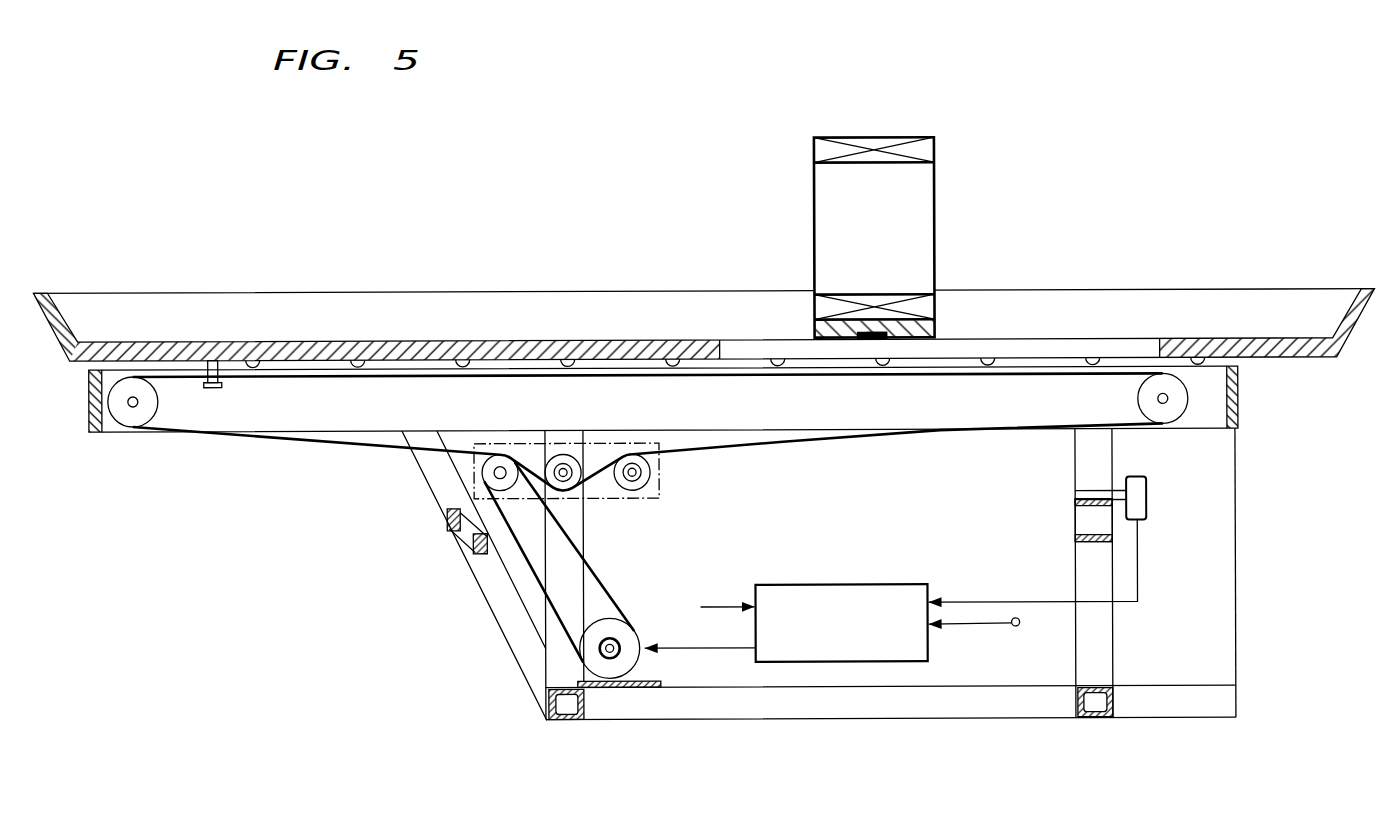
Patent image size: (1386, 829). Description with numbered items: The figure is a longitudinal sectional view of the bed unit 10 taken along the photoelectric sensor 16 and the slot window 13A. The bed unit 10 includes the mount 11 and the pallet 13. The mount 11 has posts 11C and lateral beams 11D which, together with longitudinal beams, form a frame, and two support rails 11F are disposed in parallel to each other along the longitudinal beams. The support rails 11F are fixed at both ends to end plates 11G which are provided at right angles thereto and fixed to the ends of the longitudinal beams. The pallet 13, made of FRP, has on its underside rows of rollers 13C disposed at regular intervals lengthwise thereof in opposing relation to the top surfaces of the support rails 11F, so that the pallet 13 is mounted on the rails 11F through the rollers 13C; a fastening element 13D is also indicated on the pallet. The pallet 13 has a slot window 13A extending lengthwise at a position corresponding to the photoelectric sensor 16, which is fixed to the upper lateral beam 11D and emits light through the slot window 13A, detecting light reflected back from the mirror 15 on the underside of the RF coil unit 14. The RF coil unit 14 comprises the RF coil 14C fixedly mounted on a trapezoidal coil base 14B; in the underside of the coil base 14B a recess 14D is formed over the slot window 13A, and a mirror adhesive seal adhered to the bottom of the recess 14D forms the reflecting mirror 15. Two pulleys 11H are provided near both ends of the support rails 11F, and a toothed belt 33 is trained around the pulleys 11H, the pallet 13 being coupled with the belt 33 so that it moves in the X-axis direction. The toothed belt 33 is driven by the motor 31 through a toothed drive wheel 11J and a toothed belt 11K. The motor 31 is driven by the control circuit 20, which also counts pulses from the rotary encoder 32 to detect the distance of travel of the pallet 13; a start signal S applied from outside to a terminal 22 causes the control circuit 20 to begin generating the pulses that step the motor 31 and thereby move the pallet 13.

The bed unit 10 is at (1212, 777).
The mount 11 is at (988, 720).
The posts 11C is at (578, 520).
The lateral beams 11D is at (1077, 545).
The support rails 11F is at (783, 418).
The end plates 11G is at (89, 398).
The pulleys 11H is at (117, 426).
The toothed drive wheel 11J is at (480, 472).
The toothed belt 11K is at (597, 595).
The pallet 13 is at (1262, 290).
The slot window 13A is at (1160, 343).
The rollers 13C is at (357, 366).
The bolt 13D is at (213, 387).
The RF coil unit 14 is at (936, 178).
The coil base 14B is at (937, 322).
The RF coil 14C is at (813, 153).
The recess 14D is at (877, 341).
The reflecting mirror 15 is at (865, 341).
The photoelectric sensor 16 is at (1146, 500).
The control circuit 20 is at (927, 645).
The terminal 22 is at (1019, 626).
The motor 31 is at (620, 620).
The rotary encoder 32 is at (626, 613).
The toothed belt 33 is at (890, 437).